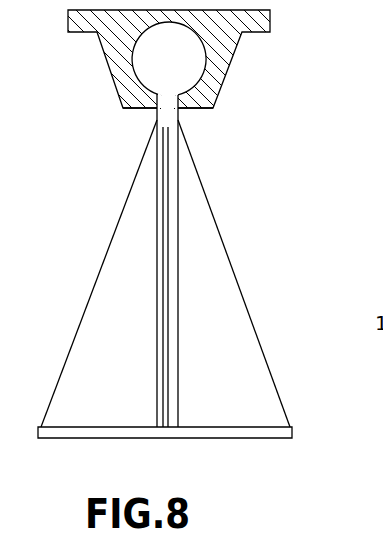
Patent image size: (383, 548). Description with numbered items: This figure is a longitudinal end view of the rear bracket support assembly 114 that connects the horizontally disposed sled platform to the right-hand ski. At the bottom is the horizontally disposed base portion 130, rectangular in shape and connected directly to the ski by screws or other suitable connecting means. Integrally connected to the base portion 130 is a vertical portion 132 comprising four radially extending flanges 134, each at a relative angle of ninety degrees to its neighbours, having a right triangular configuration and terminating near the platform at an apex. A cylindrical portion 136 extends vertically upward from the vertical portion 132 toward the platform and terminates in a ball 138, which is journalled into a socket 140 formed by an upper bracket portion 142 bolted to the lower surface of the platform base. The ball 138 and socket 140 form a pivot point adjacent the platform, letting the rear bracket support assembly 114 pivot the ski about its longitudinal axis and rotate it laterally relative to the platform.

The upper bracket portion 142 is at (233, 63).
The socket 140 is at (146, 107).
The ball 138 is at (189, 107).
The rear bracket support assembly 114 is at (202, 296).
The cylindrical portion 136 is at (172, 246).
The flanges 134 is at (105, 264).
The vertical portion 132 is at (243, 258).
The base portion 130 is at (266, 438).